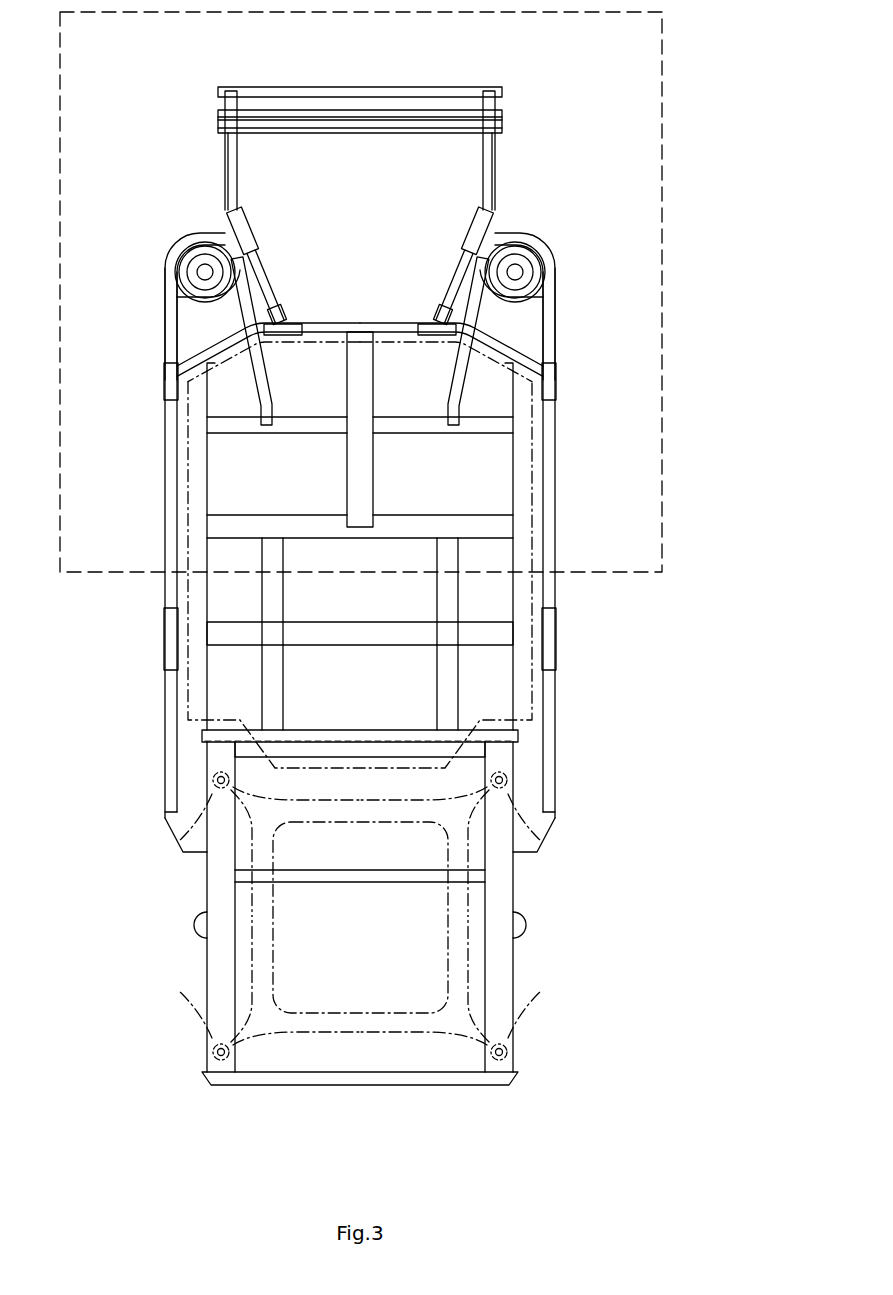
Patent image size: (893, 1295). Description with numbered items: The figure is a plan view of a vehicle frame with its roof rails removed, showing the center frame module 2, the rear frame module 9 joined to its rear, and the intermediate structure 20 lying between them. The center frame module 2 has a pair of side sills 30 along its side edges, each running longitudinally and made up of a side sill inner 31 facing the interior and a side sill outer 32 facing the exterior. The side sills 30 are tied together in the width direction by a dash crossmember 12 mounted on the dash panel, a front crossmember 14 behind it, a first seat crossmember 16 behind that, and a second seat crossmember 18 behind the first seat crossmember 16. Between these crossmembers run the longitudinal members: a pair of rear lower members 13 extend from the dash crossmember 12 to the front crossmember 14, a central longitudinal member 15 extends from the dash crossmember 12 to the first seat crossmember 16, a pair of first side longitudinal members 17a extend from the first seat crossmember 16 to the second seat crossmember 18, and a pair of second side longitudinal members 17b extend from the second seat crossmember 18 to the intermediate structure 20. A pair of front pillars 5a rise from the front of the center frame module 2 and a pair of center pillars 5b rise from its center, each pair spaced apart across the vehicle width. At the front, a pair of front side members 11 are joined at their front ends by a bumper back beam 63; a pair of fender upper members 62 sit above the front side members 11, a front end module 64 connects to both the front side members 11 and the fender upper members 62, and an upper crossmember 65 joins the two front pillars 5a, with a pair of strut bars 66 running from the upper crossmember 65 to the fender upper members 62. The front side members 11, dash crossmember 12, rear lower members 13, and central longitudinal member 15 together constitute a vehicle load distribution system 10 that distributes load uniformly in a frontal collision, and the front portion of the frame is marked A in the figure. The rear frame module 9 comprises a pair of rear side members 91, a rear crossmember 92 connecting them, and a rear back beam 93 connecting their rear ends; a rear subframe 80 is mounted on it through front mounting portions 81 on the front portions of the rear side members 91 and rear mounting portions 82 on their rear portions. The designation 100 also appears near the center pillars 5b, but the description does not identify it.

The loading unit region A is at (677, 272).
The center frame module 2 is at (148, 450).
The front pillar 5a is at (170, 382).
The center pillar 5b is at (170, 637).
The rear frame module 9 is at (360, 938).
The vehicle load distribution system 10 is at (201, 332).
The front side member 11 is at (225, 182).
The dash crossmember 12 is at (384, 323).
The rear lower member 13 is at (256, 368).
The front crossmember 14 is at (288, 433).
The central longitudinal member 15 is at (375, 470).
The first seat crossmember 16 is at (321, 522).
The first side longitudinal member 17a is at (268, 598).
The second side longitudinal member 17b is at (268, 717).
The second seat crossmember 18 is at (358, 628).
The intermediate structure 20 is at (345, 724).
The side sill 30 is at (360, 560).
The side sill inner 31 is at (183, 549).
The side sill outer 32 is at (170, 525).
The fender upper member 62 is at (160, 270).
The bumper back beam 63 is at (361, 87).
The front end module 64 is at (369, 140).
The upper crossmember 65 is at (317, 338).
The strut bar 66 is at (262, 282).
The rear subframe 80 is at (467, 940).
The front mounting portion 81 is at (213, 784).
The rear mounting portion 82 is at (213, 1054).
The rear side member 91 is at (222, 894).
The rear crossmember 92 is at (364, 878).
The rear back beam 93 is at (363, 1085).
The hidden connection line 100 is at (190, 685).